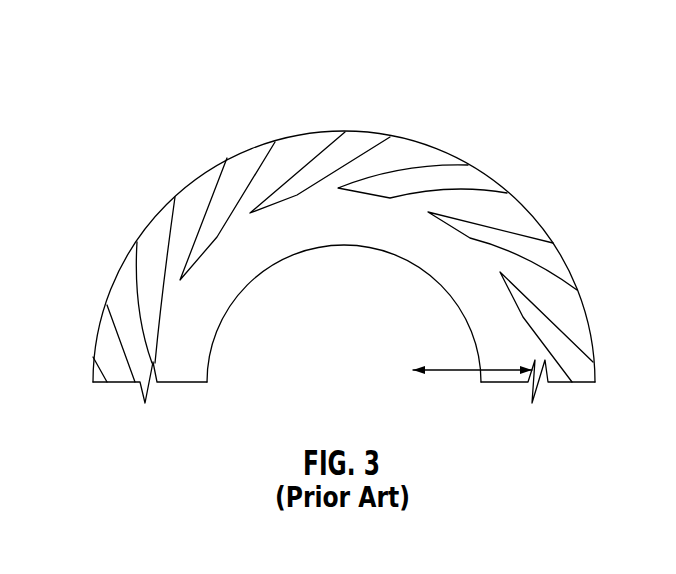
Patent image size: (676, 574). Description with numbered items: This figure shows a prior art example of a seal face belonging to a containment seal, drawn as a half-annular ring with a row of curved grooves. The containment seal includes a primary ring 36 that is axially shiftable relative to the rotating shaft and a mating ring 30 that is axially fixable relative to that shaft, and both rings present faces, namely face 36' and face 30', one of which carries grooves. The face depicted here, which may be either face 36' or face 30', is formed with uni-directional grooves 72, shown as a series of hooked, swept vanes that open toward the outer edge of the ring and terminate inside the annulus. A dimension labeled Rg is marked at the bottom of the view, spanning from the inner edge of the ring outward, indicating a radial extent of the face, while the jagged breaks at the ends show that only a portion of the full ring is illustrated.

The mating ring 30 is at (328, 229).
The primary ring 36 is at (328, 229).
The face of the mating ring 30' is at (149, 263).
The face of the primary ring 36' is at (149, 263).
The uni-directional grooves 72 is at (361, 142).
The gap radius Rg is at (452, 368).